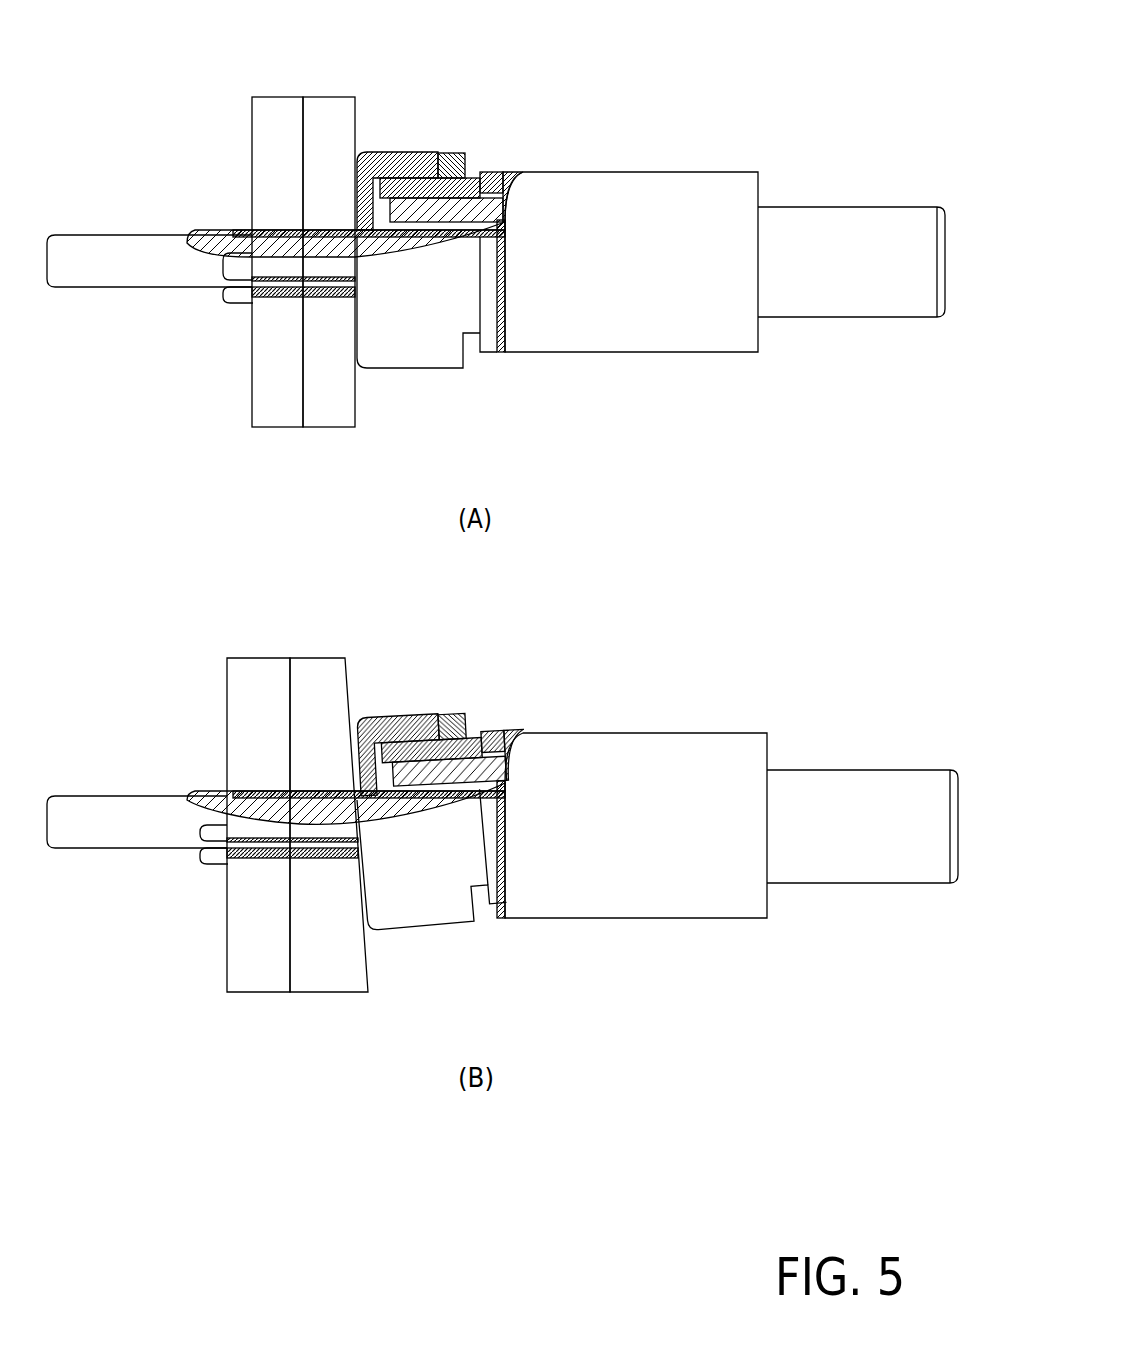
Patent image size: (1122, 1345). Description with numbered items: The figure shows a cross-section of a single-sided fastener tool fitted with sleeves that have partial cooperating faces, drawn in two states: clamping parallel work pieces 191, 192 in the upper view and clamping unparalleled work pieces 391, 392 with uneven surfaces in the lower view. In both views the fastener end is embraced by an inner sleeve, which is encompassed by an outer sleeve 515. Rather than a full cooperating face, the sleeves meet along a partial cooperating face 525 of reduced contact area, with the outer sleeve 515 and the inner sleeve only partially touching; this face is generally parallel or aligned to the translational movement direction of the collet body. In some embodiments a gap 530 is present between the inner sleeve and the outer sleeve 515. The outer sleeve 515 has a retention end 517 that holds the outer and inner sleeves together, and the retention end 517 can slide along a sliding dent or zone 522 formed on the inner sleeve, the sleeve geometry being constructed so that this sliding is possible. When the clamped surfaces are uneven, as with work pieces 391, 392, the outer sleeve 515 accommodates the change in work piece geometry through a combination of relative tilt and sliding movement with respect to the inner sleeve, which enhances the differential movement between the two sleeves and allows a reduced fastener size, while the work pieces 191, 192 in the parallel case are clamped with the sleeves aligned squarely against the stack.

The work piece 191 is at (268, 97).
The work piece 192 is at (330, 97).
The work piece 391 is at (265, 658).
The work piece 392 is at (327, 658).
The outer sleeve 515 is at (388, 160).
The retention end 517 is at (488, 657).
The sliding dent or zone 522 is at (478, 190).
The cooperating face 525 is at (413, 163).
The gap 530 is at (440, 163).